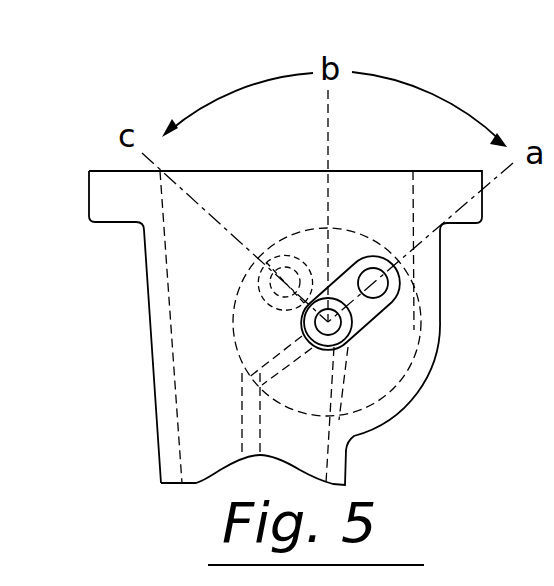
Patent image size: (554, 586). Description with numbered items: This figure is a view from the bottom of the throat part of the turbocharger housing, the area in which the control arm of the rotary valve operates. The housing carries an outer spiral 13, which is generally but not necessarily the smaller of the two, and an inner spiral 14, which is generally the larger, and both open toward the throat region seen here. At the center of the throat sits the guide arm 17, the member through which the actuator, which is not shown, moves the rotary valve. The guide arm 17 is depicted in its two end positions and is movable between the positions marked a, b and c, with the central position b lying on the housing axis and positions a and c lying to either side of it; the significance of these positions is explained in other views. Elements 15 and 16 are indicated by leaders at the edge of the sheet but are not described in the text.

The outer spiral 13 is at (200, 443).
The inner spiral 14 is at (300, 447).
The first component 15 is at (553, 22).
The second component 16 is at (553, 87).
The guide arm 17 is at (378, 310).